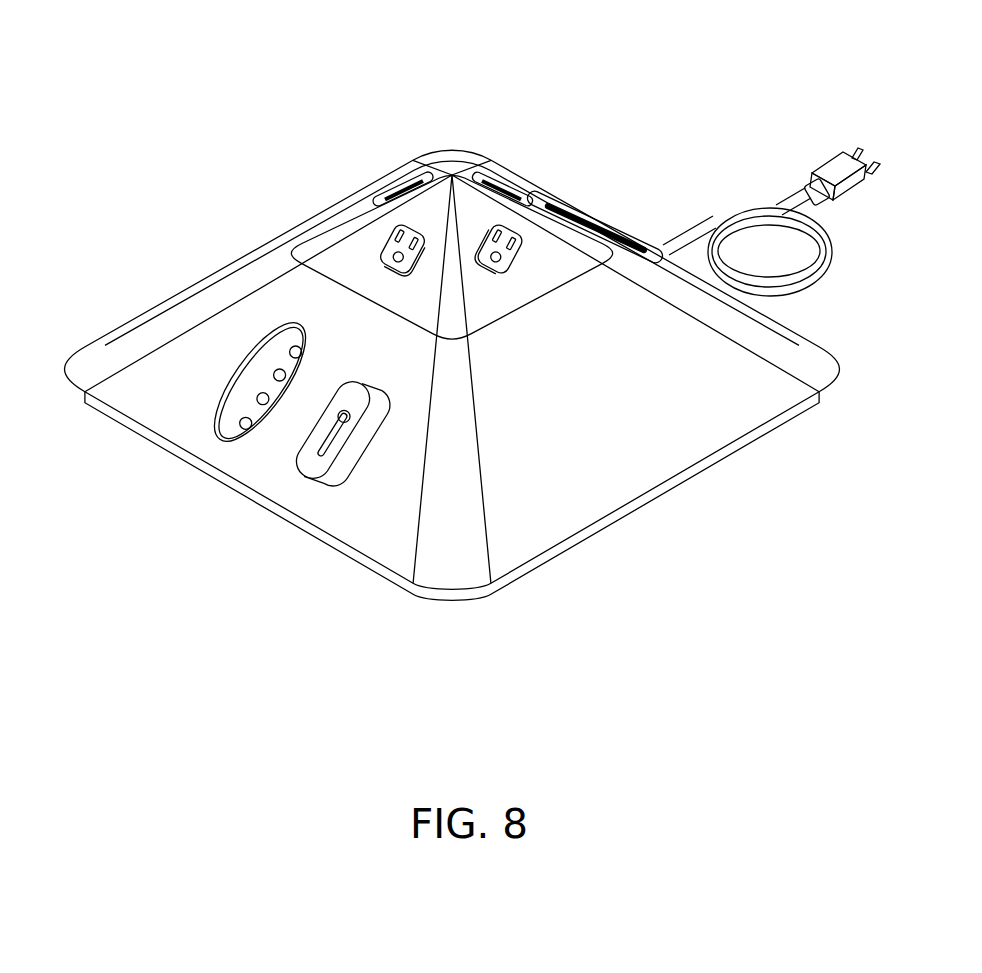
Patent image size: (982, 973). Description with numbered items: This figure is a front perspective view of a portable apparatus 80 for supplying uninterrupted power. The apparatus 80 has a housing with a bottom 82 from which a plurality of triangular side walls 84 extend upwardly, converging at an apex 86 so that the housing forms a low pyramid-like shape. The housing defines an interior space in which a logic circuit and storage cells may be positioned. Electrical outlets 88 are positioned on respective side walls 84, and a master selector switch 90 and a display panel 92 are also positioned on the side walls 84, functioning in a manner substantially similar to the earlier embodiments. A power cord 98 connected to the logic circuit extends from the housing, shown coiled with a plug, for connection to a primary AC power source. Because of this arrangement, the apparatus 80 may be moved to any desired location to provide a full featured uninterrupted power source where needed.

The apparatus 80 is at (365, 70).
The bottom 82 is at (640, 504).
The triangular side walls 84 is at (388, 524).
The apex 86 is at (452, 175).
The electrical outlets 88 is at (382, 263).
The master selector switch 90 is at (350, 410).
The display panel 92 is at (220, 372).
The power cord 98 is at (730, 220).